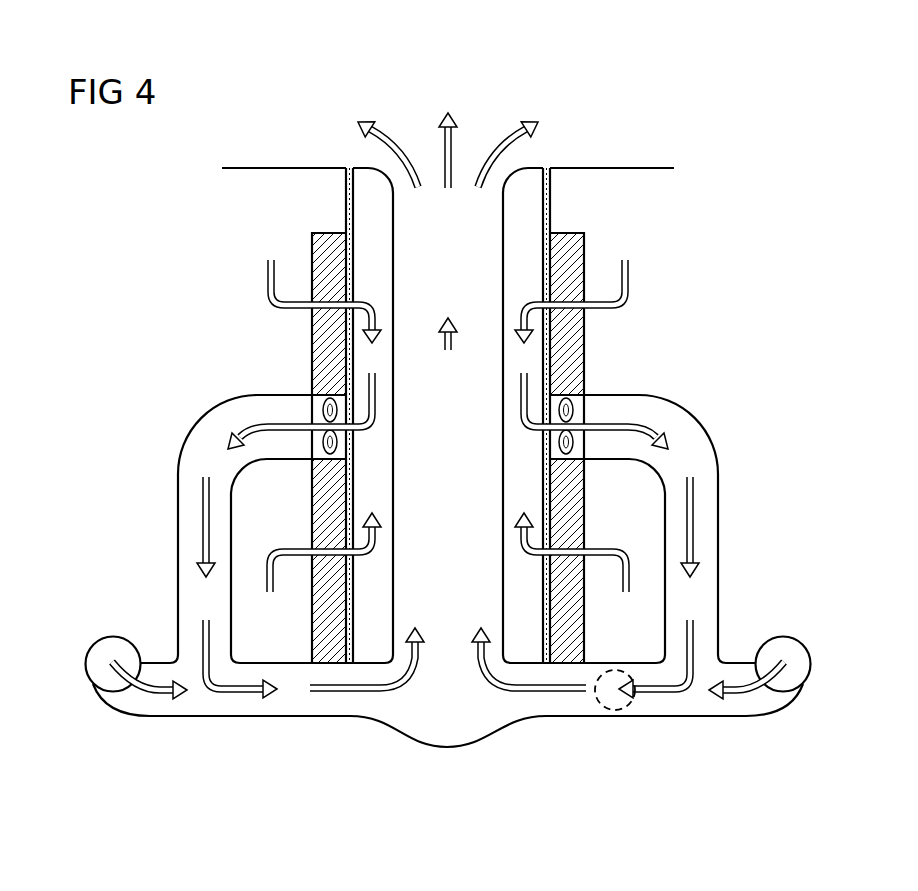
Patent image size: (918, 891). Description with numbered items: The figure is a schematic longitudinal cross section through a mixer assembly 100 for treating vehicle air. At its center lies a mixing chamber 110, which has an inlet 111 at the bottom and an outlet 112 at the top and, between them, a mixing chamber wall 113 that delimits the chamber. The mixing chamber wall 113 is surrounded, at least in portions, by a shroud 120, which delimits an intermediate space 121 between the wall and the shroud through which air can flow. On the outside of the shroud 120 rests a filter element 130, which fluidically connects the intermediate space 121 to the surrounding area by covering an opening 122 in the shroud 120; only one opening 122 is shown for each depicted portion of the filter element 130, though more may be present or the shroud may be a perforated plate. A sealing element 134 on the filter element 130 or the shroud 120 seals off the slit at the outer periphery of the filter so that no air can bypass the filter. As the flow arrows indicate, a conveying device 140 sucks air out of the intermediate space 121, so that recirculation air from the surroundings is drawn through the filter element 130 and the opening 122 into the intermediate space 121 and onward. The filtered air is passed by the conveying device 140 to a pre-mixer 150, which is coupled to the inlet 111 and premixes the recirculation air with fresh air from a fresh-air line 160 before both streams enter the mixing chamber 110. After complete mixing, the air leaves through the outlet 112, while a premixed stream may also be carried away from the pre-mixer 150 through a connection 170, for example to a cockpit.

The mixer assembly 100 is at (154, 300).
The mixing chamber 110 is at (443, 557).
The inlet 111 is at (448, 740).
The outlet 112 is at (424, 147).
The mixing chamber wall 113 is at (366, 214).
The shroud 120 is at (347, 193).
The intermediate space 121 is at (372, 278).
The opening 122 is at (343, 315).
The filter element 130 is at (317, 252).
The sealing element 134 is at (343, 233).
The conveying device 140 is at (322, 410).
The pre-mixer 150 is at (190, 518).
The fresh-air line 160 is at (104, 648).
The connection 170 is at (618, 702).